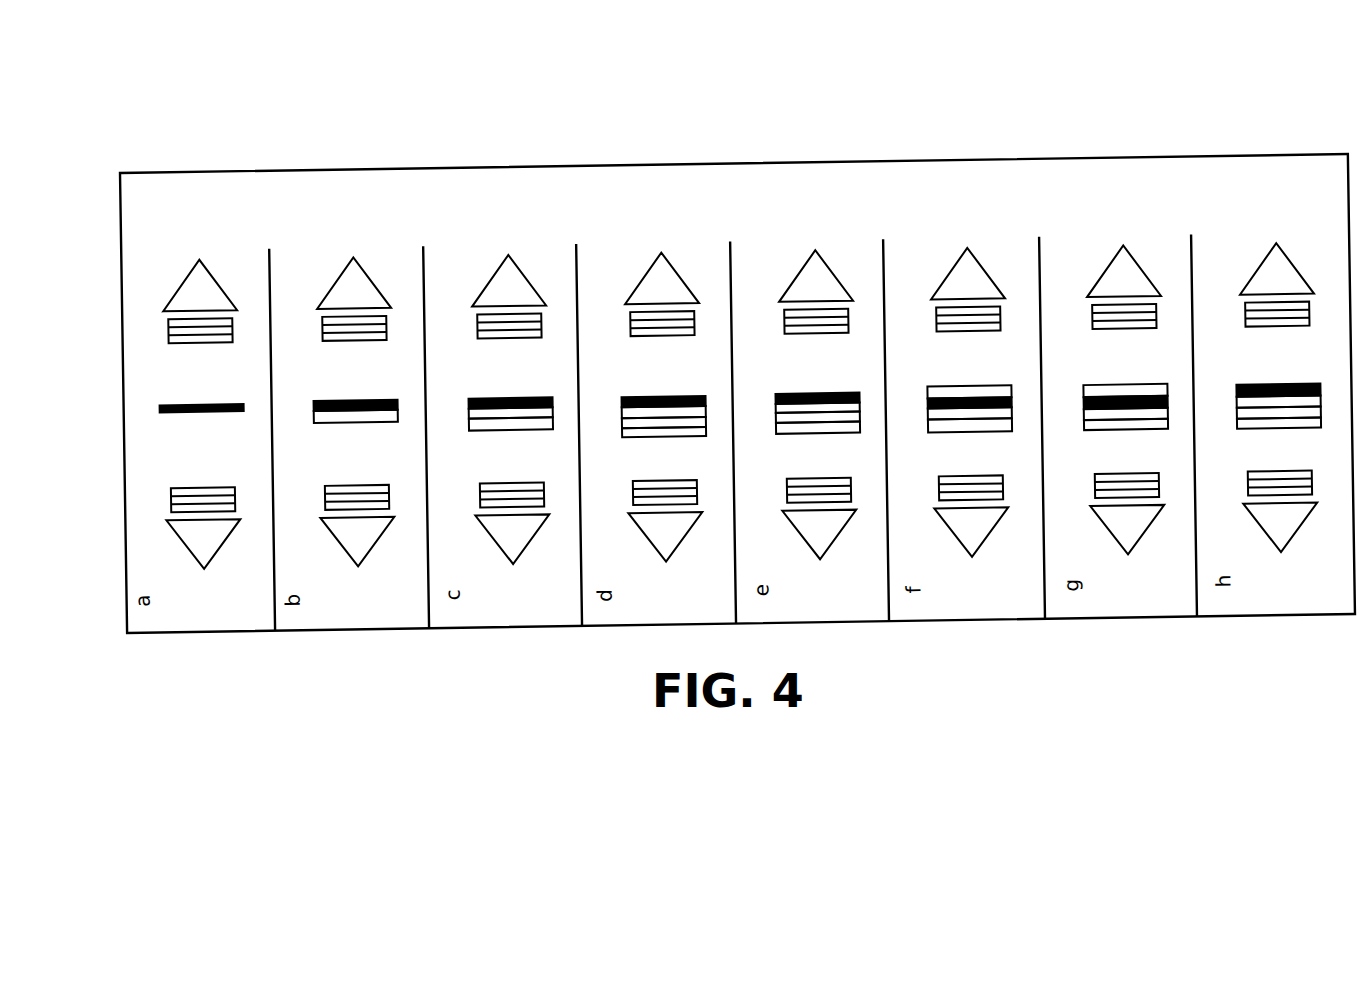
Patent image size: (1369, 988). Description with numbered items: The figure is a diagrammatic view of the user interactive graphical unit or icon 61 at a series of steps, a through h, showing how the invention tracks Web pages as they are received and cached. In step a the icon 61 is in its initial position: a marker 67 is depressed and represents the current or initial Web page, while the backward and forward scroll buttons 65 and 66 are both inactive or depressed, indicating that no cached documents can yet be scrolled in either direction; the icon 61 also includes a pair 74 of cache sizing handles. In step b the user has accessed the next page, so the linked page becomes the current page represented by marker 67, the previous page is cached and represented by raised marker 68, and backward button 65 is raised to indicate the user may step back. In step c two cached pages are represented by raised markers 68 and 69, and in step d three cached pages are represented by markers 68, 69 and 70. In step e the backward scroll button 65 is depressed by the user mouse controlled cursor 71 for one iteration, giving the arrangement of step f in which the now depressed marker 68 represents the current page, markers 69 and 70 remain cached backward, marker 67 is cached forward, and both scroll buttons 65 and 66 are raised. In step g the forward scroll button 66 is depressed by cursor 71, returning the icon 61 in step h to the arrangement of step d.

The user interactive graphical unit or icon 61 is at (190, 230).
The backward scroll button 65 is at (751, 558).
The forward scroll button 66 is at (719, 264).
The marker 67 is at (723, 377).
The marker 68 is at (818, 431).
The marker 69 is at (895, 405).
The marker 70 is at (972, 443).
The user mouse controlled cursor 71 is at (963, 353).
The pair of cache sizing handles 74 is at (683, 393).